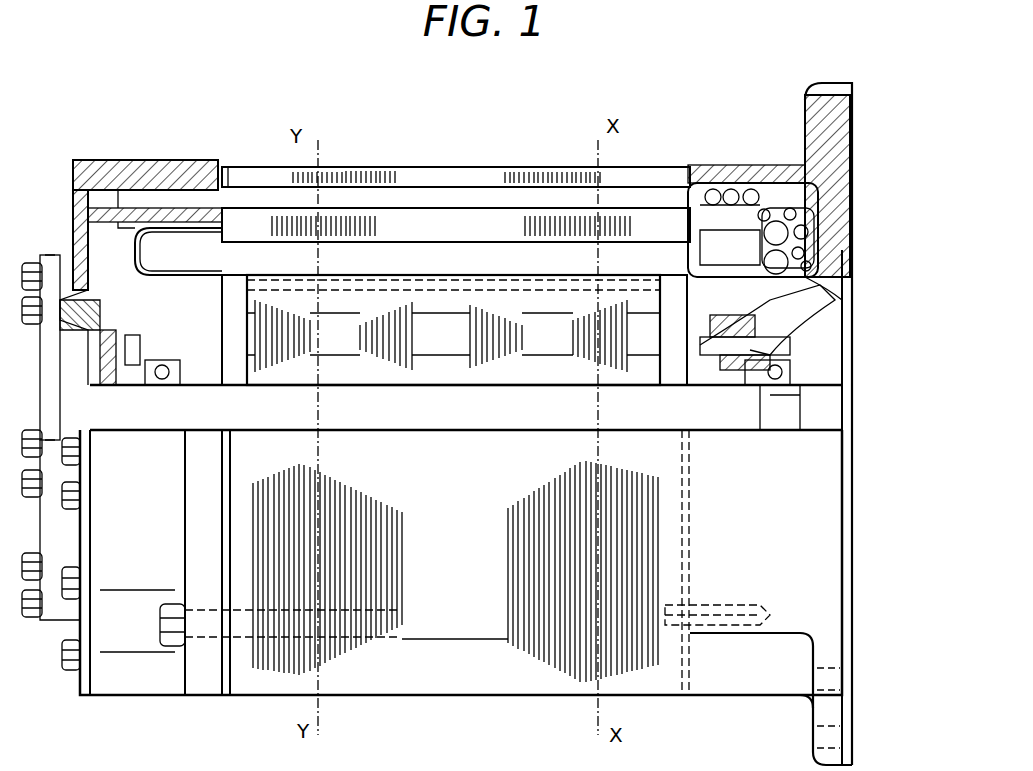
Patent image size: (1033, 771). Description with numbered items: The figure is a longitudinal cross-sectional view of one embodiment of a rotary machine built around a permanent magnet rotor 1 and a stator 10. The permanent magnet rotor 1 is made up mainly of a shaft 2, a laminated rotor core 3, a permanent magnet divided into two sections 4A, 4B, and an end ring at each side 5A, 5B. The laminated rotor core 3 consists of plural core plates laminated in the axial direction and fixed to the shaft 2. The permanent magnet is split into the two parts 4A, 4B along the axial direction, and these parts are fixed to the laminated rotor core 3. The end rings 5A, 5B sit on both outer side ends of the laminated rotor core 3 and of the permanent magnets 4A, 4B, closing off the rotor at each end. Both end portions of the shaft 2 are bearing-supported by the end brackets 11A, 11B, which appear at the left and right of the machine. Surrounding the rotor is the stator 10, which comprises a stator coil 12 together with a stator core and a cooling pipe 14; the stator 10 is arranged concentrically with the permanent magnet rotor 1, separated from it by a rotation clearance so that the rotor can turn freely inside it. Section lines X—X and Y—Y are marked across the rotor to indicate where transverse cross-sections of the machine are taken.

The permanent magnet rotor 1 is at (512, 290).
The shaft 2 is at (690, 405).
The laminated rotor core 3 is at (660, 548).
The permanent magnet 4A is at (334, 184).
The permanent magnet 4B is at (640, 283).
The end ring 5A is at (222, 298).
The end ring 5B is at (668, 330).
The stator 10 is at (508, 700).
The end bracket 11A is at (130, 690).
The end bracket 11B is at (740, 678).
The stator coil 12 is at (266, 688).
The cooling pipe 14 is at (693, 198).